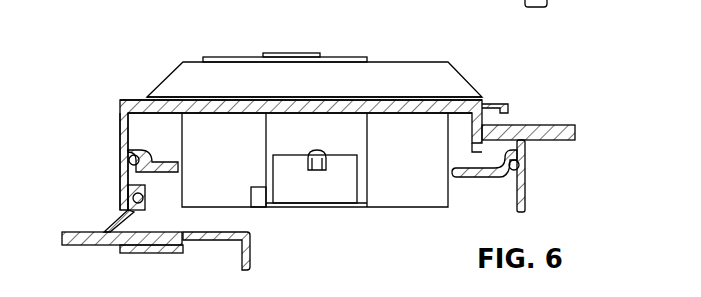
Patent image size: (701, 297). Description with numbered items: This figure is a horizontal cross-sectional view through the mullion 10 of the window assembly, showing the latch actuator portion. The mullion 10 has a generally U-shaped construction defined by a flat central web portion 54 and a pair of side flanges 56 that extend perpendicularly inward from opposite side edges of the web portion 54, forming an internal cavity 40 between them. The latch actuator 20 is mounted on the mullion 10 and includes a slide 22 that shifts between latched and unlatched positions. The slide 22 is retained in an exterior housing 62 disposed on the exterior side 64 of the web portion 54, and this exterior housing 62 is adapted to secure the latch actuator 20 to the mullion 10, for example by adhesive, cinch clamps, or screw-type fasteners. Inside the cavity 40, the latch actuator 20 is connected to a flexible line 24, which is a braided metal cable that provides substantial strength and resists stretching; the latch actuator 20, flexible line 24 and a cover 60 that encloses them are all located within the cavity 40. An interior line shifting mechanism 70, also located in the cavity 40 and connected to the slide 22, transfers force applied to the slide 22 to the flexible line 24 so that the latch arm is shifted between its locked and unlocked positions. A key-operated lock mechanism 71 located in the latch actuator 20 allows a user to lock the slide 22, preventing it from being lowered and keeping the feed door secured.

The mullion 10 is at (118, 110).
The latch actuator 20 is at (455, 68).
The slide 22 is at (335, 52).
The flexible line 24 is at (305, 172).
The internal cavity 40 is at (465, 158).
The web portion 54 is at (135, 100).
The side flanges 56 is at (118, 117).
The cover 60 is at (385, 210).
The exterior housing 62 is at (438, 60).
The exterior side 64 is at (490, 102).
The interior line shifting mechanism 70 is at (288, 188).
The lock mechanism 71 is at (304, 52).